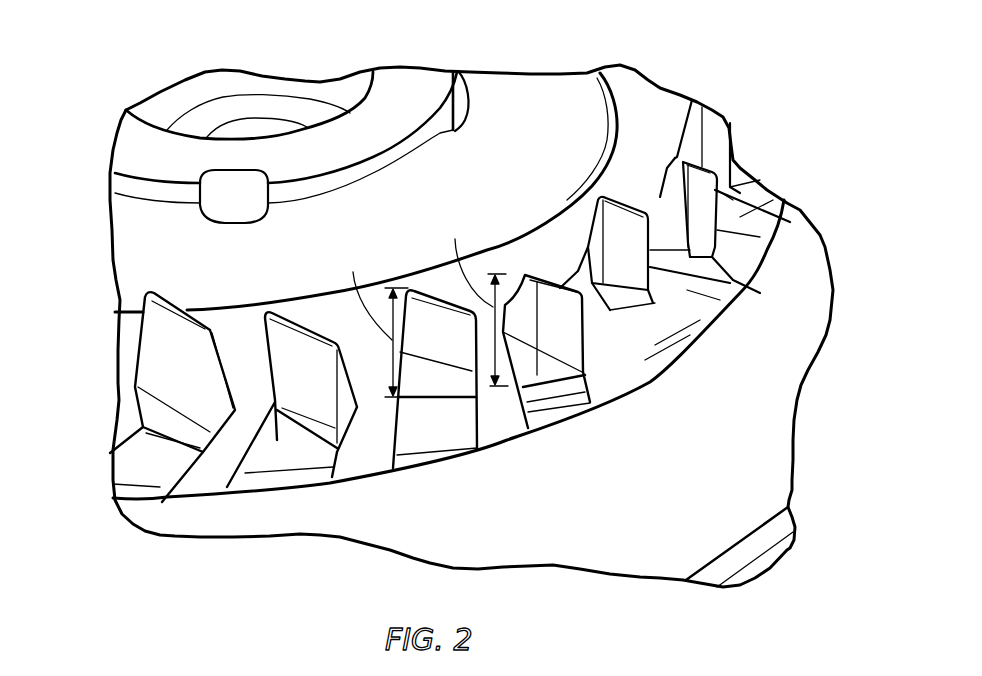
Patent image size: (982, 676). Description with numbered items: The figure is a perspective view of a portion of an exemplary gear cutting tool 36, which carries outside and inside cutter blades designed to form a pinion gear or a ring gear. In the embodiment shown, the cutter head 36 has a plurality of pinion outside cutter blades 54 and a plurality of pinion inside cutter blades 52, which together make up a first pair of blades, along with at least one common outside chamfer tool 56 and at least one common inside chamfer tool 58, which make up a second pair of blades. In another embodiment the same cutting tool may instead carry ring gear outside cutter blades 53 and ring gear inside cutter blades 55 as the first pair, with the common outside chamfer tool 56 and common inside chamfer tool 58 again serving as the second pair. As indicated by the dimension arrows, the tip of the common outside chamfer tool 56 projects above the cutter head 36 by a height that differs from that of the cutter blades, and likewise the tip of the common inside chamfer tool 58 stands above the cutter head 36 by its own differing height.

The cutting tool 36 is at (429, 326).
The pinion outside cutter blade 54 is at (130, 397).
The ring gear outside cutter blade 53 is at (173, 378).
The pinion inside cutter blade 52 is at (233, 441).
The ring gear inside cutter blade 55 is at (292, 380).
The common outside chamfer tool 56 is at (442, 343).
The common inside chamfer tool 58 is at (560, 323).